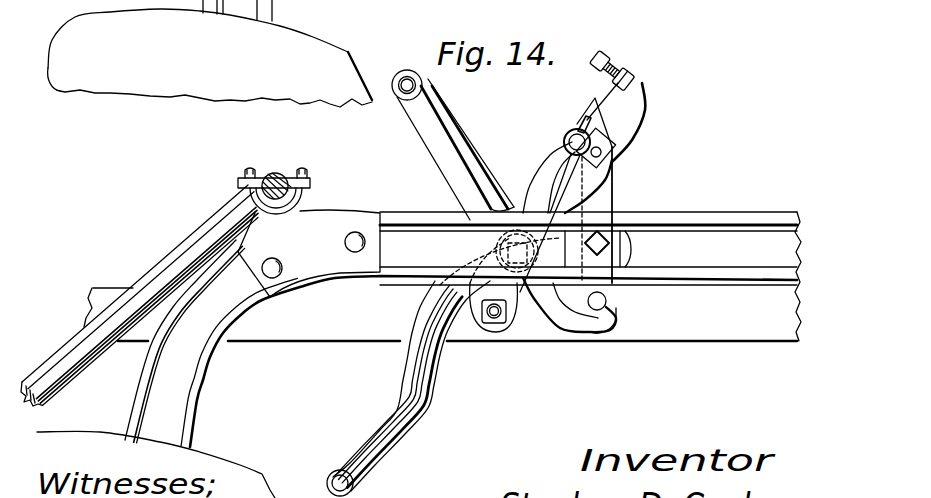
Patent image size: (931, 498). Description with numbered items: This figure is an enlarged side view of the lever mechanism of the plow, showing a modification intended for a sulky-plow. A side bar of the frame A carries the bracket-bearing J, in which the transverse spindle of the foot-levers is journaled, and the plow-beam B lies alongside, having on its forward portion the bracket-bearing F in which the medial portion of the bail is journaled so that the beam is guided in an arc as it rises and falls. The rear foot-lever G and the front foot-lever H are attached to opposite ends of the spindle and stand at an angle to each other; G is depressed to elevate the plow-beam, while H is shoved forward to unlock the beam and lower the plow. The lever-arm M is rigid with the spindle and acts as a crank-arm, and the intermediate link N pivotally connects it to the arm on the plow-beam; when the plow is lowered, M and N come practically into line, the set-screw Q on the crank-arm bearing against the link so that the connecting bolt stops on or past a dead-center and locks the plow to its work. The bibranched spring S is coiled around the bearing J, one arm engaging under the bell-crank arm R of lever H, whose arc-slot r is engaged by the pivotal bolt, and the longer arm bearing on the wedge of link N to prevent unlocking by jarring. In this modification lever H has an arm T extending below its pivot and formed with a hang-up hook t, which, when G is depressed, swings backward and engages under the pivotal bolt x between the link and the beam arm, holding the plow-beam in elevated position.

The side bars of the frame A is at (90, 280).
The plow-beam B is at (150, 392).
The bracket-bearing F is at (276, 181).
The front foot-lever H is at (432, 155).
The lever-arm M is at (560, 160).
The bell-crank arm R is at (560, 175).
The arc-slot r is at (577, 128).
The intermediate link N is at (614, 186).
The set-screw Q is at (610, 55).
The bibranched spring S is at (494, 248).
The bracket-bearing J is at (518, 310).
The rear foot-lever G is at (392, 397).
The arm T is at (583, 328).
The hang-up hook t is at (604, 326).
The pivotal bolt x is at (607, 301).